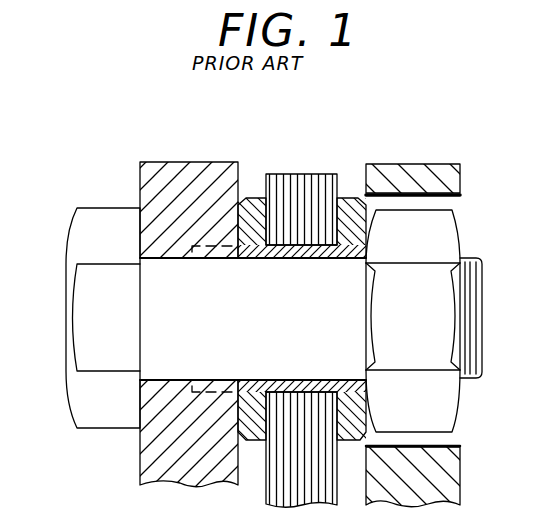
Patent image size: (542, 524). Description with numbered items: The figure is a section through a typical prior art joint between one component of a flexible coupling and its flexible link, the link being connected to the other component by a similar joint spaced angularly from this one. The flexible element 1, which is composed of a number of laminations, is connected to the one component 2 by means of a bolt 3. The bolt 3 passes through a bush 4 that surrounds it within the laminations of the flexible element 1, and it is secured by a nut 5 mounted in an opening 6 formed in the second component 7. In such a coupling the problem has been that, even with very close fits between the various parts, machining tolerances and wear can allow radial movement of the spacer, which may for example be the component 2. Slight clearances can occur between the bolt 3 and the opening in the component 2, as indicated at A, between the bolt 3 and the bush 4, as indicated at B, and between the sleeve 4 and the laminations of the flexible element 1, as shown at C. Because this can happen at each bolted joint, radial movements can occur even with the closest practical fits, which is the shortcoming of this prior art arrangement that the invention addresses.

The flexible element 1 is at (283, 187).
The component 2 is at (178, 180).
The bolt 3 is at (157, 330).
The bush 4 is at (352, 205).
The nut 5 is at (437, 247).
The opening 6 is at (450, 196).
The second component 7 is at (417, 177).
The clearance between bolt and component opening A is at (163, 257).
The clearance between bolt and bush B is at (272, 268).
The clearance between sleeve and laminations C is at (320, 248).